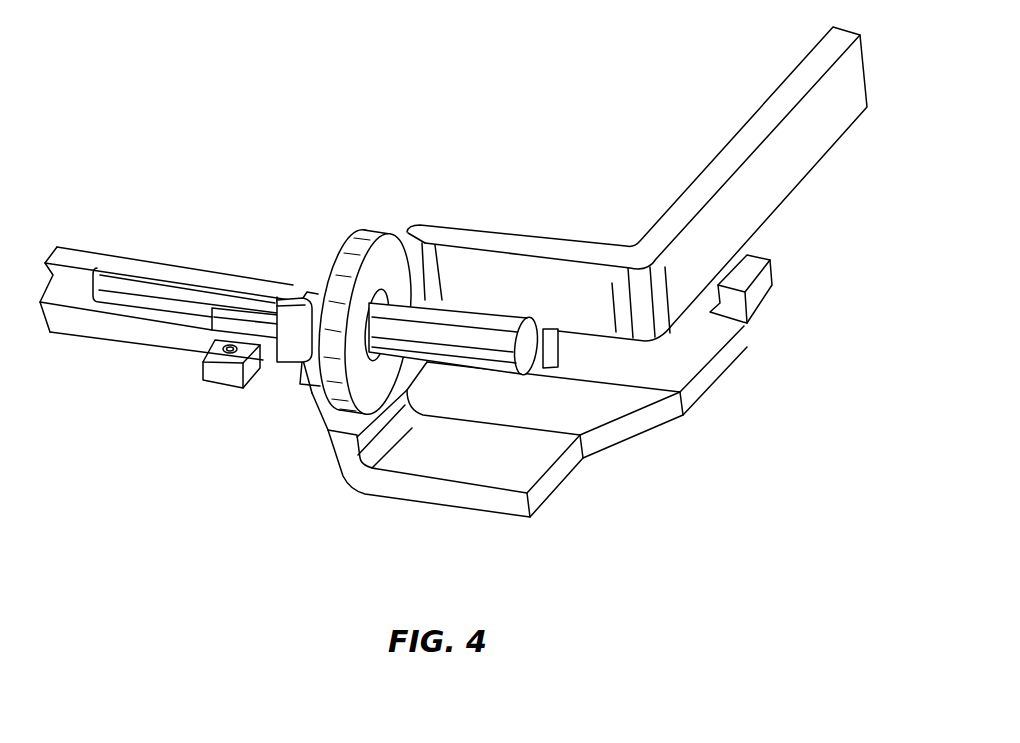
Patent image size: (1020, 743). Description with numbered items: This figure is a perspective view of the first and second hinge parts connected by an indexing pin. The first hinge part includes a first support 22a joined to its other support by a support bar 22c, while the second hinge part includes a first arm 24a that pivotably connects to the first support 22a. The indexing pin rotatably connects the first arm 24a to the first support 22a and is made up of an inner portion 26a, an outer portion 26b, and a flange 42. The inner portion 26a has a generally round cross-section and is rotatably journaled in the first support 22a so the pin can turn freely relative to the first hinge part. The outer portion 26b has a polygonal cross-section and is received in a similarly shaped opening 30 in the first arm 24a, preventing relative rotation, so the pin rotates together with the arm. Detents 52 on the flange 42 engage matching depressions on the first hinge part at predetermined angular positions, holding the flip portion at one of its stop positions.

The first arm 24a is at (757, 110).
The opening 30 is at (387, 295).
The flange 42 is at (310, 272).
The inner portion 26a is at (193, 293).
The support bar 22c is at (147, 347).
The detent 52 is at (323, 377).
The outer portion 26b is at (470, 352).
The first support 22a is at (414, 500).